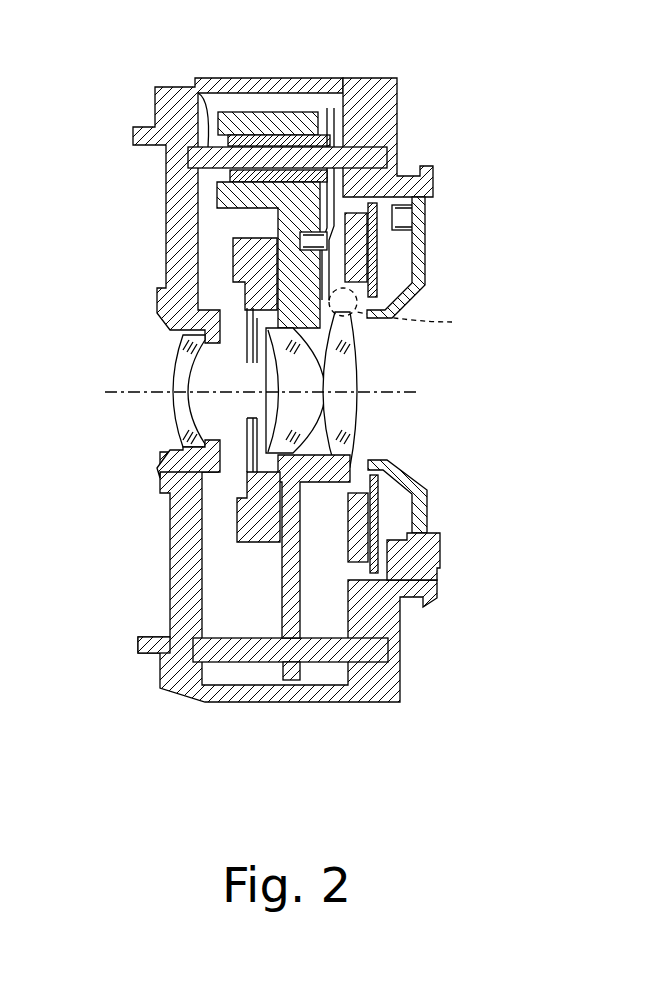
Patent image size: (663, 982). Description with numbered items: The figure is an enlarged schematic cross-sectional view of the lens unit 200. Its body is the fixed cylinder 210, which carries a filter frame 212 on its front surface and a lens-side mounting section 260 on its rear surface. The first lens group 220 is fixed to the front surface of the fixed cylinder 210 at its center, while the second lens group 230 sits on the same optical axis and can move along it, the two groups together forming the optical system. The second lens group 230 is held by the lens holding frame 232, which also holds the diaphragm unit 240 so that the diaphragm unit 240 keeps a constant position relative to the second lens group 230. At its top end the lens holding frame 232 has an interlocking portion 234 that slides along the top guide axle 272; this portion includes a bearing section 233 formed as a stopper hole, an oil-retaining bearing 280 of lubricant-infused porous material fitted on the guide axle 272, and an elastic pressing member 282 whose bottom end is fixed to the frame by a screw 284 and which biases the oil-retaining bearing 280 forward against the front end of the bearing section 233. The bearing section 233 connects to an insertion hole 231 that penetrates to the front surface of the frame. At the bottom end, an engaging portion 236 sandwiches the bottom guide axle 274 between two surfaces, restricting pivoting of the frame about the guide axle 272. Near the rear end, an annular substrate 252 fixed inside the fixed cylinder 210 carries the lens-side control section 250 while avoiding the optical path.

The lens unit 200 is at (103, 35).
The guide axle 272 is at (207, 108).
The interlocking portion 234 is at (245, 120).
The bearing section 233 is at (268, 138).
The oil-retaining bearing 280 is at (329, 108).
The pressing member 282 is at (348, 93).
The insertion hole 231 is at (198, 190).
The lens holding frame 232 is at (275, 222).
The screw 284 is at (348, 242).
The first lens group 220 is at (170, 340).
The second lens group 230 is at (360, 378).
The diaphragm unit 240 is at (258, 542).
The annular substrate 252 is at (400, 478).
The lens-side control section 250 is at (380, 523).
The filter frame 212 is at (138, 636).
The lens-side mounting section 260 is at (430, 607).
The guide axle 274 is at (227, 662).
The engaging portion 236 is at (293, 680).
The fixed cylinder 210 is at (324, 700).